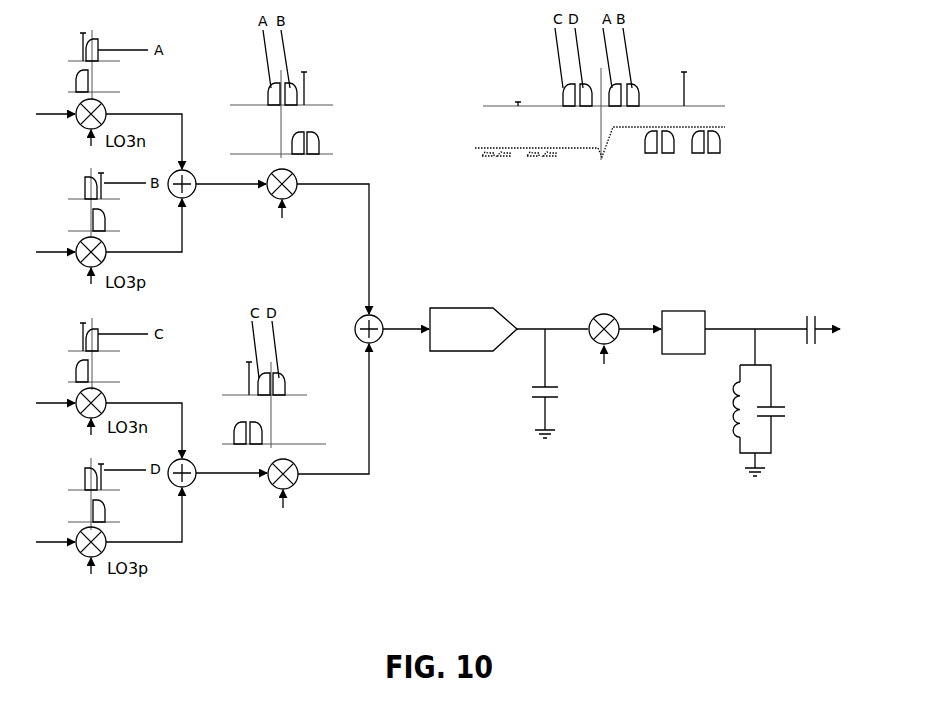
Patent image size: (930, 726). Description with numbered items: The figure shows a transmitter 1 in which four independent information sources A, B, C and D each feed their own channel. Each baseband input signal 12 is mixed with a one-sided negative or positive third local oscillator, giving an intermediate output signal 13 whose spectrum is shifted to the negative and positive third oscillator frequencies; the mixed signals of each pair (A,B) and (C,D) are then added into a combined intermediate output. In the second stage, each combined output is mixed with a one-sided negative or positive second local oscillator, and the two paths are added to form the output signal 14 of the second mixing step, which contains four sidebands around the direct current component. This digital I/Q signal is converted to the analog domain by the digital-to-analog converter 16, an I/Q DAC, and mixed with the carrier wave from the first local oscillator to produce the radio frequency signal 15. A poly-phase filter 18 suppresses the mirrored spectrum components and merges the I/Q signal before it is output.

The transmitter 1 is at (419, 163).
The input signal 12 is at (74, 50).
The intermediate output signal 13 is at (74, 78).
The output signal of LO2 mixing step 14 is at (334, 125).
The radio frequency signal 15 is at (494, 133).
The digital-to-analog converter 16 is at (435, 351).
The poly-phase filter 18 is at (660, 345).